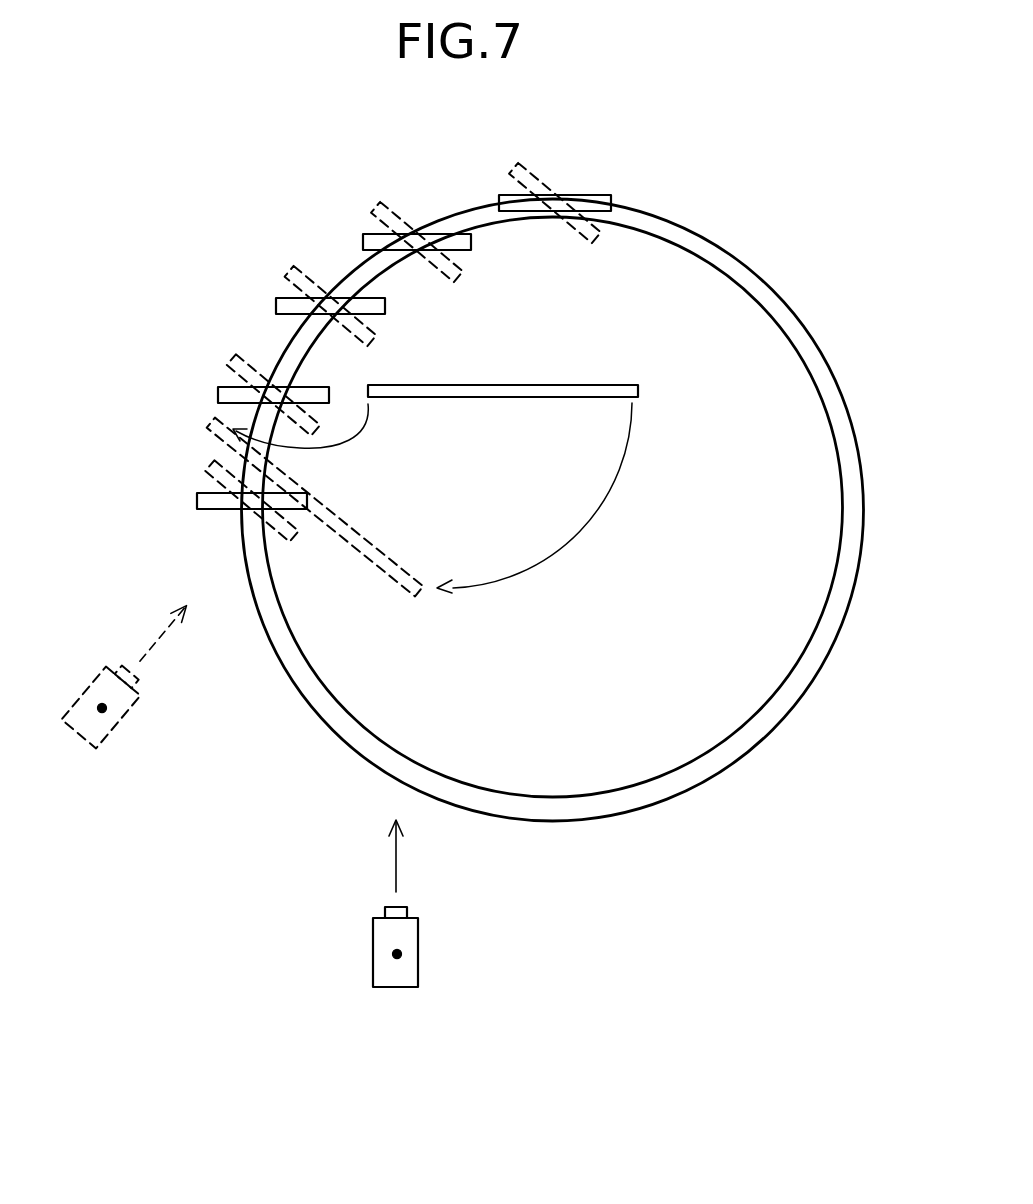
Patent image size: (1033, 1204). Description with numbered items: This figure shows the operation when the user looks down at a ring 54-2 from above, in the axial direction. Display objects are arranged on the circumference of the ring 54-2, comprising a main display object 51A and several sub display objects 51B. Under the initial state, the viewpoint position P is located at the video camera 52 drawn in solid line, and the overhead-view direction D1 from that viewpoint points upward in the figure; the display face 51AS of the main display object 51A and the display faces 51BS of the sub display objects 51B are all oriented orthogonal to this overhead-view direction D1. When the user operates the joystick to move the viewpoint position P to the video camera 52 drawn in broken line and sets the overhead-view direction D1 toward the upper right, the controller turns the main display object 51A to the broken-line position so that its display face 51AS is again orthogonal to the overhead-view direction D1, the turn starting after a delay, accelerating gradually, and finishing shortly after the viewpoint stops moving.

The main display object 51A is at (585, 388).
The sub display objects 51B is at (499, 203).
The display face of the main display object 51AS is at (483, 398).
The display face of the sub display object 51BS is at (257, 517).
The video camera 52 is at (420, 933).
The viewpoint position P is at (401, 953).
The overhead-view direction D1 is at (396, 865).
The ring 54-2 is at (640, 798).